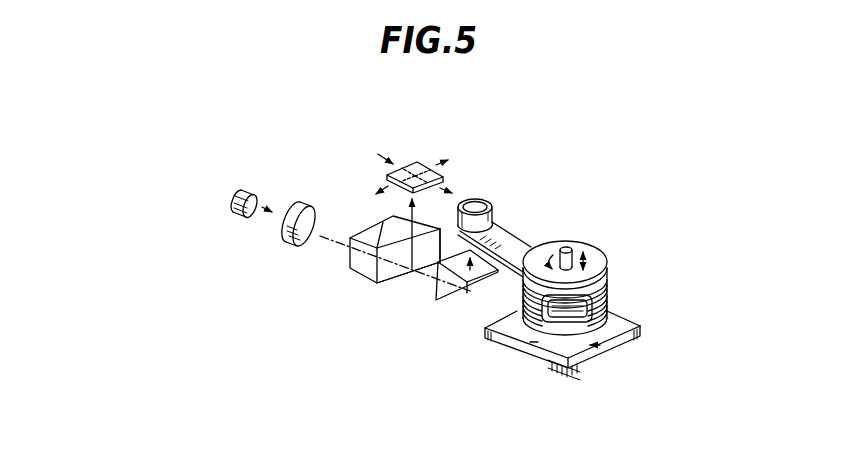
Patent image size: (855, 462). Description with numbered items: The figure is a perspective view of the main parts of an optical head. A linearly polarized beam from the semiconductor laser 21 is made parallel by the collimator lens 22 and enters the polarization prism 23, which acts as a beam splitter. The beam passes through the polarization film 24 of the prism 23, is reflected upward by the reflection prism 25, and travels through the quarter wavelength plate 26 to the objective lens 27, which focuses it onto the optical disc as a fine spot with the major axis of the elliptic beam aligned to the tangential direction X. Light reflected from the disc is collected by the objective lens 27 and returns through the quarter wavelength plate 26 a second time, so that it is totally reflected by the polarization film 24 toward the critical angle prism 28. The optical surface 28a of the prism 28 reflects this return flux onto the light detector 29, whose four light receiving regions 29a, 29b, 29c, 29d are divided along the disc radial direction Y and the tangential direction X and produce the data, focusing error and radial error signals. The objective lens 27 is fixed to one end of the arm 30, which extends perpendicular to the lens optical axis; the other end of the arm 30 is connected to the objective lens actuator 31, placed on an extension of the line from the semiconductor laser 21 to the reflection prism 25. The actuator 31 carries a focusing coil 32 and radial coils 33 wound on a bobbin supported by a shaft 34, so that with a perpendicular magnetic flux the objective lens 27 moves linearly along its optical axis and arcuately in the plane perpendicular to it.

The semiconductor laser 21 is at (243, 190).
The collimator lens 22 is at (300, 212).
The polarization prism 23 is at (368, 268).
The polarization film 24 is at (360, 247).
The reflection prism 25 is at (446, 290).
The quarter wavelength plate 26 is at (482, 270).
The objective lens 27 is at (492, 205).
The critical angle prism 28 is at (440, 232).
The optical surface 28a is at (425, 262).
The light detector 29 is at (420, 149).
The light receiving region 29a is at (418, 163).
The light receiving region 29b is at (444, 177).
The light receiving region 29c is at (413, 172).
The light receiving region 29d is at (386, 174).
The arm 30 is at (521, 241).
The objective lens actuator 31 is at (615, 272).
The focusing coil 32 is at (535, 318).
The radial coils 33 is at (608, 311).
The shaft 34 is at (574, 250).